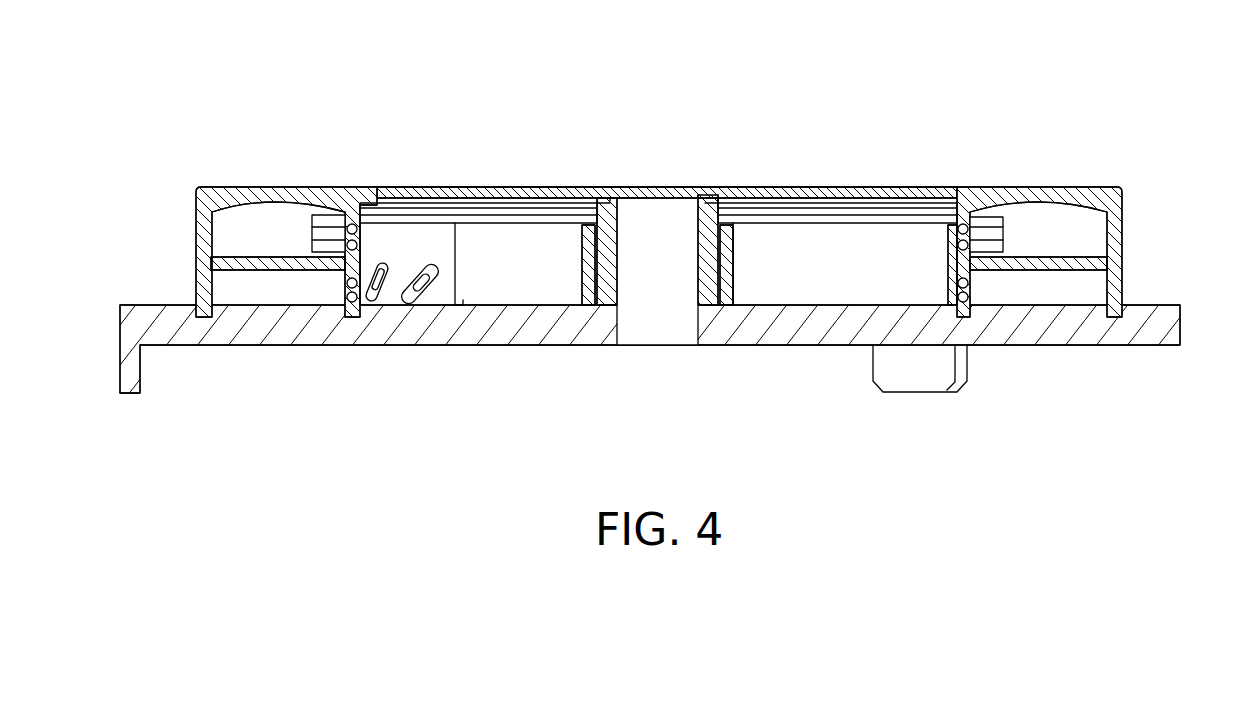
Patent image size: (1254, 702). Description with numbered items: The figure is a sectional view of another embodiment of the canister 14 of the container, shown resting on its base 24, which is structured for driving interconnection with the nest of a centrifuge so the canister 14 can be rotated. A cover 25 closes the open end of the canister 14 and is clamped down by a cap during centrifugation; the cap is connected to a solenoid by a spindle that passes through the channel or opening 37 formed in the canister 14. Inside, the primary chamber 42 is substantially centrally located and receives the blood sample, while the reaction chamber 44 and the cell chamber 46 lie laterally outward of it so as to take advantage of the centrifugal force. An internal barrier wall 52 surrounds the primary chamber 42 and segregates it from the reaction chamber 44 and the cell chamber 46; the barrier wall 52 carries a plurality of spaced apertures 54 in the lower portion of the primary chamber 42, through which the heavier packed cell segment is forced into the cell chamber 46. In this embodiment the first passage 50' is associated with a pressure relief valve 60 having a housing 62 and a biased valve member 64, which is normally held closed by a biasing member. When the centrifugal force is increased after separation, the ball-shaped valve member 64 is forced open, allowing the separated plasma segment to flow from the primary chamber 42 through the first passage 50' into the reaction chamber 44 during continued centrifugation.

The canister 14 is at (1123, 228).
The base 24 is at (258, 355).
The cover 25 is at (482, 187).
The channel or opening 37 is at (657, 322).
The primary chamber 42 is at (541, 240).
The reaction chamber 44 is at (227, 237).
The cell chamber 46 is at (232, 290).
The first passage 50' is at (667, 187).
The internal barrier wall 52 is at (438, 295).
The apertures 54 is at (373, 303).
The pressure relief valve 60 is at (640, 216).
The housing 62 is at (1003, 243).
The biased valve member 64 is at (645, 150).